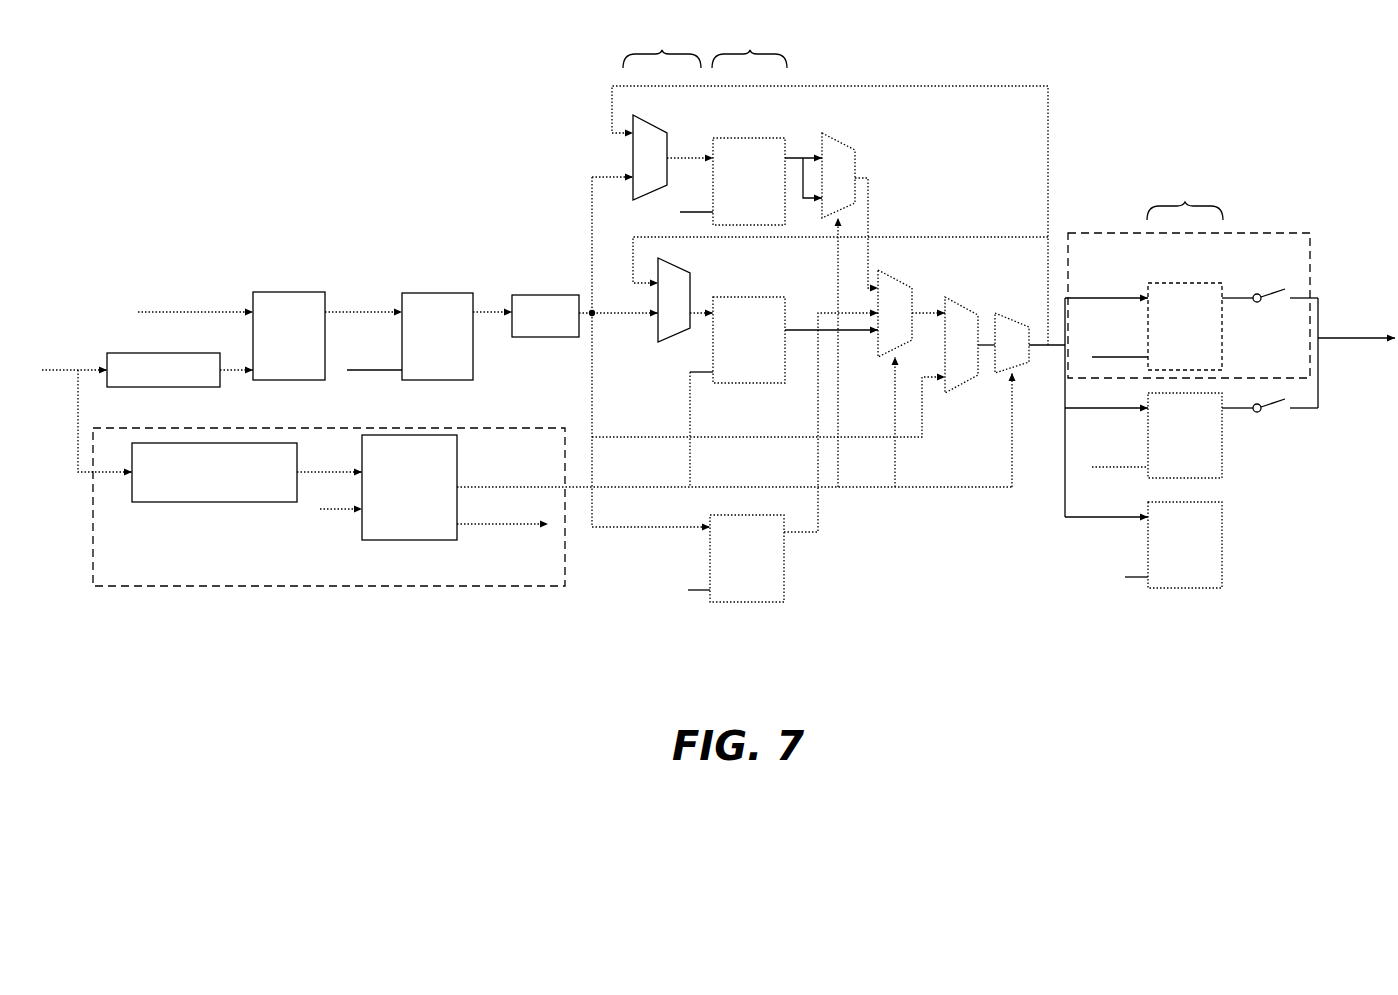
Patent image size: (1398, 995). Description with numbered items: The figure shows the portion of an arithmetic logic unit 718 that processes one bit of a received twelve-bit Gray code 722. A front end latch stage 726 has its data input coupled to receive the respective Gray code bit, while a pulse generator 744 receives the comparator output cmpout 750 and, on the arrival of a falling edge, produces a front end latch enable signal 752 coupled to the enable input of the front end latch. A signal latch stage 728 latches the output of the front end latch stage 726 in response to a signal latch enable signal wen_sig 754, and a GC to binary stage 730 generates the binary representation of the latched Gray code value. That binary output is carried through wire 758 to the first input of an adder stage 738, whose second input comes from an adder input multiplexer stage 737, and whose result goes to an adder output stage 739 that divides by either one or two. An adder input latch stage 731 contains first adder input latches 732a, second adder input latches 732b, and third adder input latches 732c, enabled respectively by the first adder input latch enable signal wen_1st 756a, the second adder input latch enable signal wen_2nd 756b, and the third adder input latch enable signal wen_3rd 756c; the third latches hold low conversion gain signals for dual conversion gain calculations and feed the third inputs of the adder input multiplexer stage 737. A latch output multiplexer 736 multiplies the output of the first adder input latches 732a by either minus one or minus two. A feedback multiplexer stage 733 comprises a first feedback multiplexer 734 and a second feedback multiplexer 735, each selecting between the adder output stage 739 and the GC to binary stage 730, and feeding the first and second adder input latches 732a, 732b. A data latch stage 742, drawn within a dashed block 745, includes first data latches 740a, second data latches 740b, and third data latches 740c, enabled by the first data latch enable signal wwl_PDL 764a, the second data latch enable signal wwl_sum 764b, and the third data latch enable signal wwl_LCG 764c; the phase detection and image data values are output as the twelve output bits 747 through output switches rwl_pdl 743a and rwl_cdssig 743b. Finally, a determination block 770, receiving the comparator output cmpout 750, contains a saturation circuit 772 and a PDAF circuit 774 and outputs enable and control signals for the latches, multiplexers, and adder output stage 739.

The arithmetic logic unit 718 is at (328, 130).
The Gray code q_gc 11:0 722 is at (176, 291).
The front end latch stage 726 is at (291, 291).
The signal latch stage 728 is at (438, 291).
The GC to binary stage 730 is at (548, 293).
The adder input latch stage 731 is at (749, 46).
The feedback multiplexer stage 733 is at (662, 46).
The first feedback multiplexer 734 is at (665, 129).
The second feedback multiplexer 735 is at (692, 277).
The latch output multiplexer 736 is at (849, 144).
The adder input multiplexer stage 737 is at (905, 283).
The adder stage 738 is at (968, 306).
The adder output stage 739 is at (1015, 316).
The first adder input latches 732a is at (752, 137).
The second adder input latches 732b is at (761, 296).
The third adder input latches 732c is at (745, 604).
The first data latches 740a is at (1187, 282).
The second data latches 740b is at (1210, 479).
The third data latches 740c is at (1182, 590).
The data latch stage 742 is at (1185, 195).
The output switch rwl_pdl 743a is at (1274, 336).
The output switch rwl_cdssig 743b is at (1284, 439).
The pulse generator 744 is at (163, 389).
The output stage dashed block 745 is at (1273, 231).
The output bits rbl 11:0 747 is at (1360, 319).
The comparator output cmpout 750 is at (66, 349).
The front end latch enable signal 752 is at (232, 376).
The signal latch enable signal wen_sig 754 is at (371, 376).
The first adder input latch enable signal wen_1st 756a is at (652, 205).
The second adder input latch enable signal wen_2nd 756b is at (652, 365).
The third adder input latch enable signal wen_3rd 756c is at (646, 587).
The wire 758 is at (776, 434).
The first data latch enable signal wwl_PDL 764a is at (1107, 341).
The second data latch enable signal wwl_sum 764b is at (1107, 451).
The third data latch enable signal wwl_LCG 764c is at (1100, 561).
The determination block 770 is at (287, 590).
The saturation circuit 772 is at (212, 505).
The PDAF circuit 774 is at (409, 543).